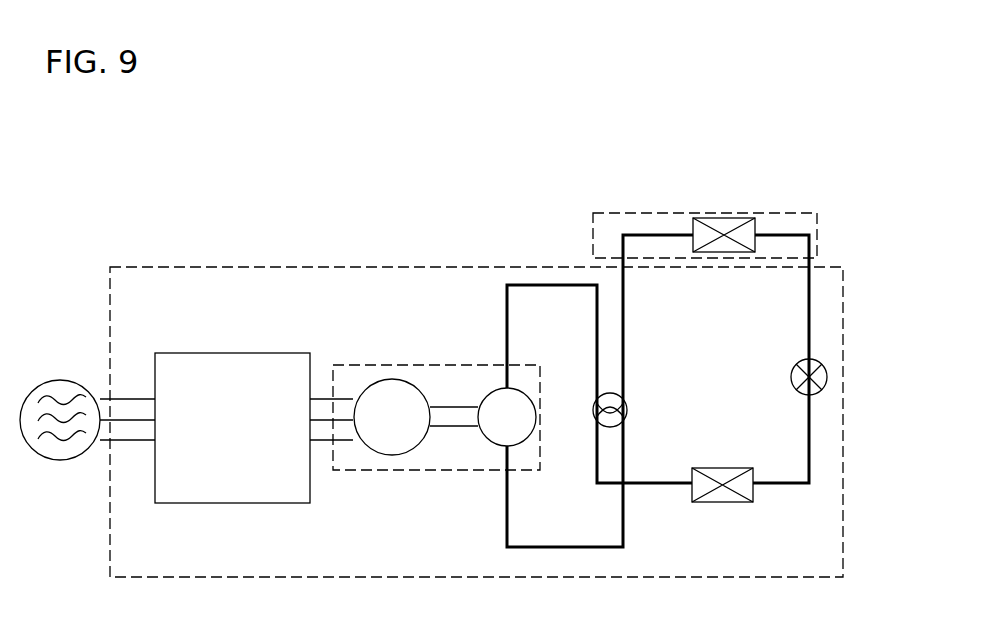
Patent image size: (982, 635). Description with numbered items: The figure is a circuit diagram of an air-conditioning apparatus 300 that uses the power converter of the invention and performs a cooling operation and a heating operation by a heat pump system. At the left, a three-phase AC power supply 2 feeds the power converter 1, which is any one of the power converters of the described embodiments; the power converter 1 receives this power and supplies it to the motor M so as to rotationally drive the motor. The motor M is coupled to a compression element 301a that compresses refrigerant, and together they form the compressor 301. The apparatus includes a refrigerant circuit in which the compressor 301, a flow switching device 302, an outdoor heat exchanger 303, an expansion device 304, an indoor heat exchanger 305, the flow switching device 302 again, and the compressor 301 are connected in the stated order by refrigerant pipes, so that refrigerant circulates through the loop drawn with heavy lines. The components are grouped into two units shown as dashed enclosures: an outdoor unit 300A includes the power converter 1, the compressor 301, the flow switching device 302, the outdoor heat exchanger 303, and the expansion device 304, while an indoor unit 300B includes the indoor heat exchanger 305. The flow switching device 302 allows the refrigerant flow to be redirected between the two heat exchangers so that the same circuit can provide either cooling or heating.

The power converter 1 is at (240, 353).
The three-phase AC power supply 2 is at (62, 380).
The air-conditioning apparatus 300 is at (389, 204).
The outdoor unit 300A is at (326, 267).
The indoor unit 300B is at (665, 262).
The compressor 301 is at (436, 411).
The compression element 301a is at (487, 441).
The flow switching device 302 is at (627, 410).
The outdoor heat exchanger 303 is at (722, 503).
The expansion device 304 is at (792, 376).
The indoor heat exchanger 305 is at (722, 253).